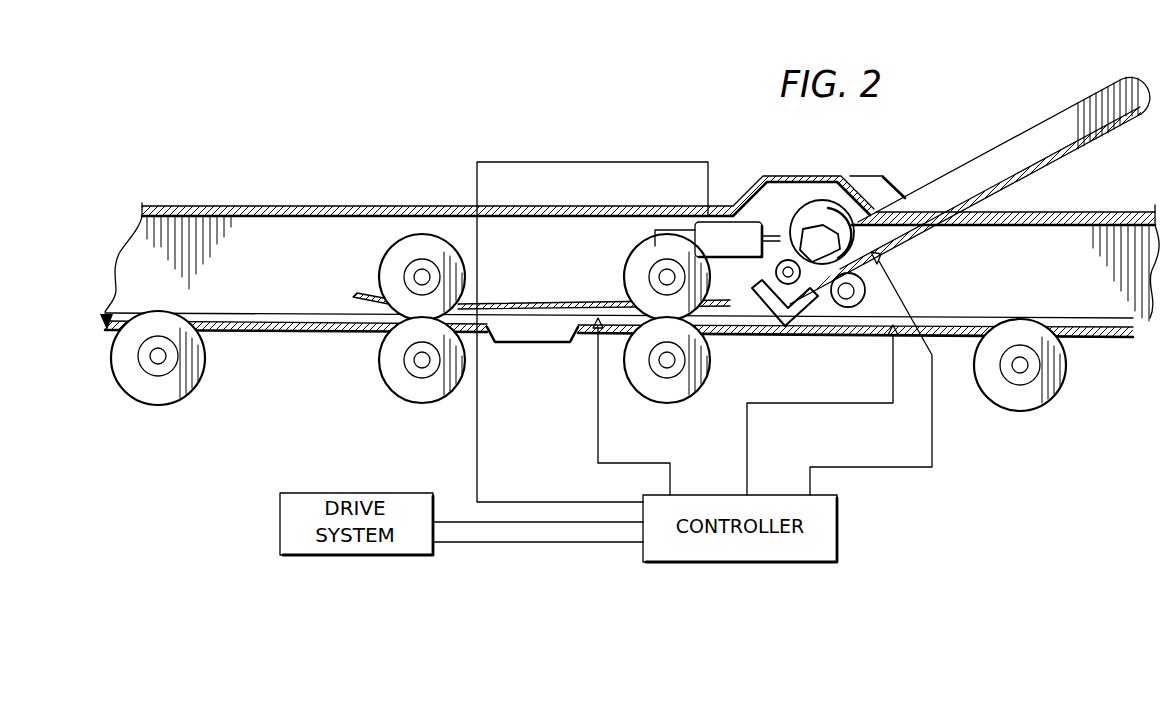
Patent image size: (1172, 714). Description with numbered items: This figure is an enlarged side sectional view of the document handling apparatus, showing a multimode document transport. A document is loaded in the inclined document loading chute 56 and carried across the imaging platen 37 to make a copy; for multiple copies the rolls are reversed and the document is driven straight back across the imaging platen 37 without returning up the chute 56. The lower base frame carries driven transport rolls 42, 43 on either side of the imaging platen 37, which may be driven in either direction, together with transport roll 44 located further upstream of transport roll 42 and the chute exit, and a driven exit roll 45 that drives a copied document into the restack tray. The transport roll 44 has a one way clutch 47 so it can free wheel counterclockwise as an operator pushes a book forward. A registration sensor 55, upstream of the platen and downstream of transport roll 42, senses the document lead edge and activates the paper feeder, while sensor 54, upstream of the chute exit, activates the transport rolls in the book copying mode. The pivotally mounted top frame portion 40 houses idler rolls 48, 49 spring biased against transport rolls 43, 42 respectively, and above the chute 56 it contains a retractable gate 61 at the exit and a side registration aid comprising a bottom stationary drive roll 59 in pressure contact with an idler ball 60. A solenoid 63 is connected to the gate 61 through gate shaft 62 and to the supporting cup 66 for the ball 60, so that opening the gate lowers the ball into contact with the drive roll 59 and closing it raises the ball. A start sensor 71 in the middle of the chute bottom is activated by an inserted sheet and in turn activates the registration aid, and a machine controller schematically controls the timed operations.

The imaging platen 37 is at (533, 326).
The top frame portion 40 is at (372, 207).
The transport roll 42 is at (668, 405).
The transport roll 43 is at (420, 405).
The transport roll 44 is at (1047, 325).
The exit roll 45 is at (188, 373).
The one way clutch 47 is at (1042, 371).
The idler roll 48 is at (400, 262).
The idler roll 49 is at (634, 258).
The sensor 54 is at (887, 336).
The registration sensor 55 is at (588, 333).
The document loading chute 56 is at (1000, 183).
The bottom stationary drive roll 59 is at (873, 293).
The idler ball 60 is at (829, 216).
The retractable gate 61 is at (753, 284).
The gate shaft 62 is at (789, 260).
The solenoid 63 is at (730, 222).
The supporting cup 66 is at (810, 247).
The start sensor 71 is at (884, 261).